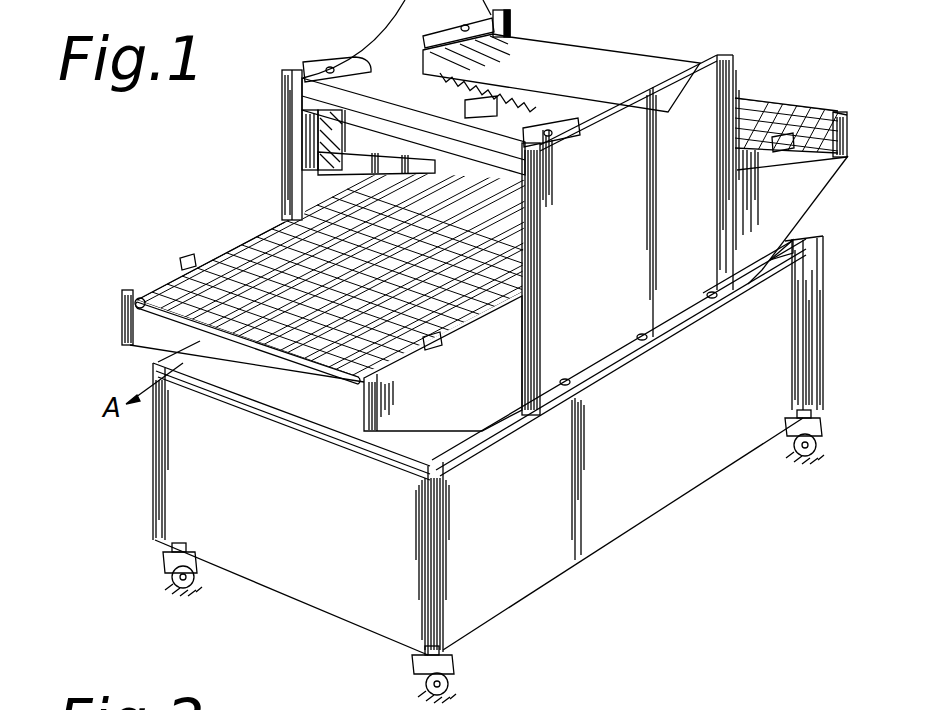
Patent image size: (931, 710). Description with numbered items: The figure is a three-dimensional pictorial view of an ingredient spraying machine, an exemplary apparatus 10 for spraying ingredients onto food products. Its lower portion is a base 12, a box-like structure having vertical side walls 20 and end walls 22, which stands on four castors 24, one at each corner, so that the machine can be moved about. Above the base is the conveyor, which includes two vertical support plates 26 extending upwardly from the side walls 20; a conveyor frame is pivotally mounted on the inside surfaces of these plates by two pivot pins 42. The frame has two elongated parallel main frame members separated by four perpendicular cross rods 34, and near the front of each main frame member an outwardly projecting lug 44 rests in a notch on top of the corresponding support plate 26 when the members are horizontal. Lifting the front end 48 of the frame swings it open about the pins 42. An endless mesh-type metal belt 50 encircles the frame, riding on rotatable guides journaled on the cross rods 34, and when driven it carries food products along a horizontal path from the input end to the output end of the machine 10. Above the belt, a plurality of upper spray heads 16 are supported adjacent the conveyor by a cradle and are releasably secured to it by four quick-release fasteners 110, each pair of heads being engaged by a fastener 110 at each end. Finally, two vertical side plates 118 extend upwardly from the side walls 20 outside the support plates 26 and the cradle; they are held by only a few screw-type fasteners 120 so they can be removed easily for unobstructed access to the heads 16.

The apparatus 10 is at (620, 562).
The base 12 is at (331, 613).
The spray heads 16 is at (574, 58).
The side walls 20 is at (706, 359).
The end walls 22 is at (368, 450).
The castors 24 is at (184, 588).
The support plates 26 is at (145, 336).
The cross rods 34 is at (775, 106).
The pivot pins 42 is at (790, 150).
The lug 44 is at (188, 256).
The front end 48 is at (148, 296).
The belt 50 is at (290, 345).
The quick-release fasteners 110 is at (352, 60).
The side plates 118 is at (520, 207).
The screw-type fasteners 120 is at (583, 379).